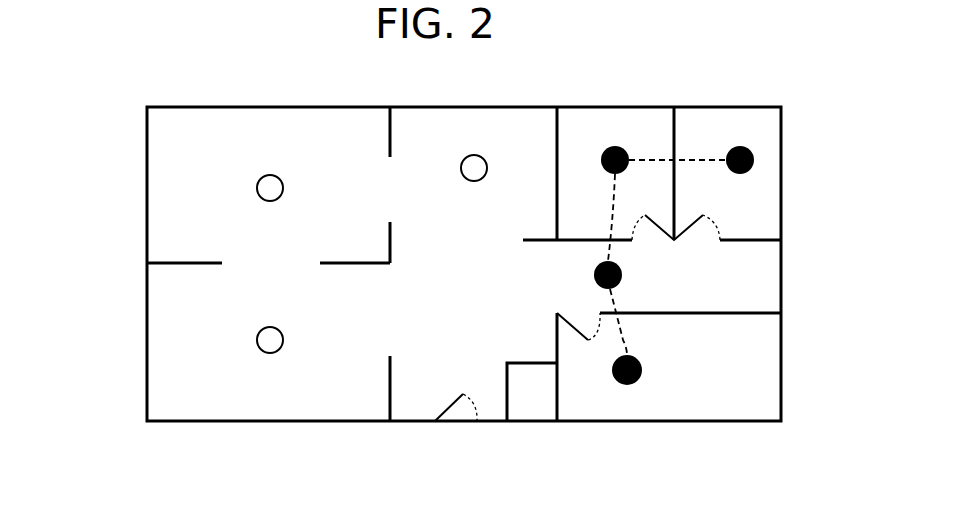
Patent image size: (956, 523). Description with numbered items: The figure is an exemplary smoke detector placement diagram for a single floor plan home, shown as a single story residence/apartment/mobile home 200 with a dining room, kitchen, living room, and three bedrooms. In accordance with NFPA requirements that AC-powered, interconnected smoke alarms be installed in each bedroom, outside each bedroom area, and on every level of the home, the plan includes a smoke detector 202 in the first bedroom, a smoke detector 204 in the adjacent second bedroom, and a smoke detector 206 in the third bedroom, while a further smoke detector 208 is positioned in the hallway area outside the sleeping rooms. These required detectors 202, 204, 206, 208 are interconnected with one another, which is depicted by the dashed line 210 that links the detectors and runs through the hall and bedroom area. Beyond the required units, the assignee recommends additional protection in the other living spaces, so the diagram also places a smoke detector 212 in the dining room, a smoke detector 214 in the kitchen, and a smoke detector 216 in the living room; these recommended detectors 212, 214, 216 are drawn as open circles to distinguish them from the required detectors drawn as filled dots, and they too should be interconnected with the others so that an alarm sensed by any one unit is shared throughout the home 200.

The single story residence/apartment/mobile home 200 is at (104, 153).
The smoke detector 202 is at (615, 146).
The smoke detector 204 is at (740, 146).
The smoke detector 206 is at (630, 385).
The smoke detector 208 is at (622, 272).
The dashed line 210 is at (630, 340).
The smoke detector 212 is at (270, 175).
The smoke detector 214 is at (474, 155).
The smoke detector 216 is at (272, 354).